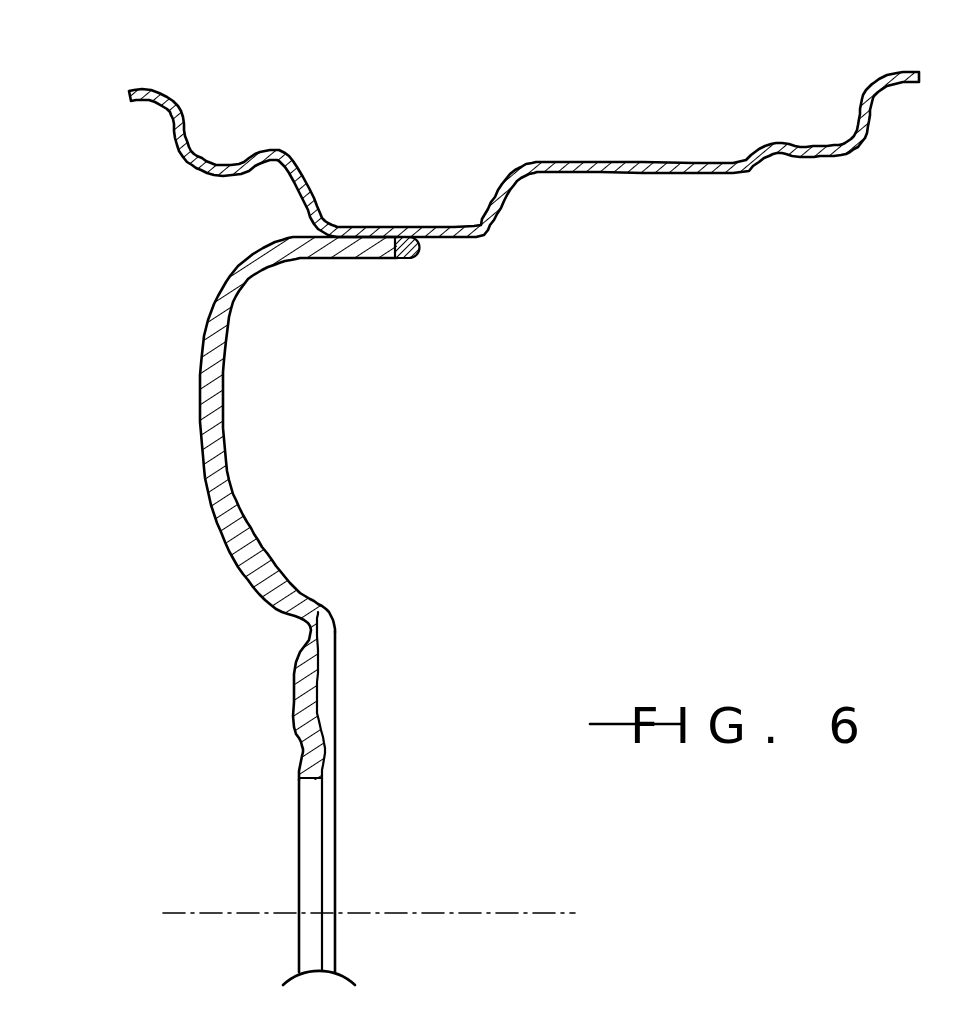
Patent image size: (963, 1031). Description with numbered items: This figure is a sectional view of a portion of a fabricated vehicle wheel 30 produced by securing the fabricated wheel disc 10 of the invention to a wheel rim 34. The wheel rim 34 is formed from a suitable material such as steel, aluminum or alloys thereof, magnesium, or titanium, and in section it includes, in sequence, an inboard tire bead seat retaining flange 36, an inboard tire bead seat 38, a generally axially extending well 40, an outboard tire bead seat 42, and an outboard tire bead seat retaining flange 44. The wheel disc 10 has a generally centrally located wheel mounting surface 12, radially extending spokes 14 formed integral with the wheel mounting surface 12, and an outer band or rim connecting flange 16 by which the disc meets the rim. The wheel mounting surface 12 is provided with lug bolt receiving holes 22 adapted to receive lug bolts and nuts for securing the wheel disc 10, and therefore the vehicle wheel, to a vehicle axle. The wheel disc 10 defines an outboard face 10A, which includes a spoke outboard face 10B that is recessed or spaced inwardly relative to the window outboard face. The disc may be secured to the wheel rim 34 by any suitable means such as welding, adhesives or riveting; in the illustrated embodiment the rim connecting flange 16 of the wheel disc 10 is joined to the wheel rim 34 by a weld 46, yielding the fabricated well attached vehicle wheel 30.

The wheel disc 10 is at (538, 566).
The outboard face 10A is at (164, 442).
The spoke outboard face 10B is at (200, 482).
The wheel mounting surface 12 is at (335, 872).
The spokes 14 is at (213, 457).
The rim connecting flange 16 is at (327, 260).
The lug bolt receiving holes 22 is at (307, 715).
The fabricated vehicle wheel 30 is at (180, 295).
The wheel rim 34 is at (636, 195).
The inboard tire bead seat retaining flange 36 is at (863, 100).
The inboard tire bead seat 38 is at (822, 143).
The well 40 is at (605, 162).
The outboard tire bead seat 42 is at (227, 155).
The outboard tire bead seat retaining flange 44 is at (182, 110).
The weld 46 is at (413, 253).